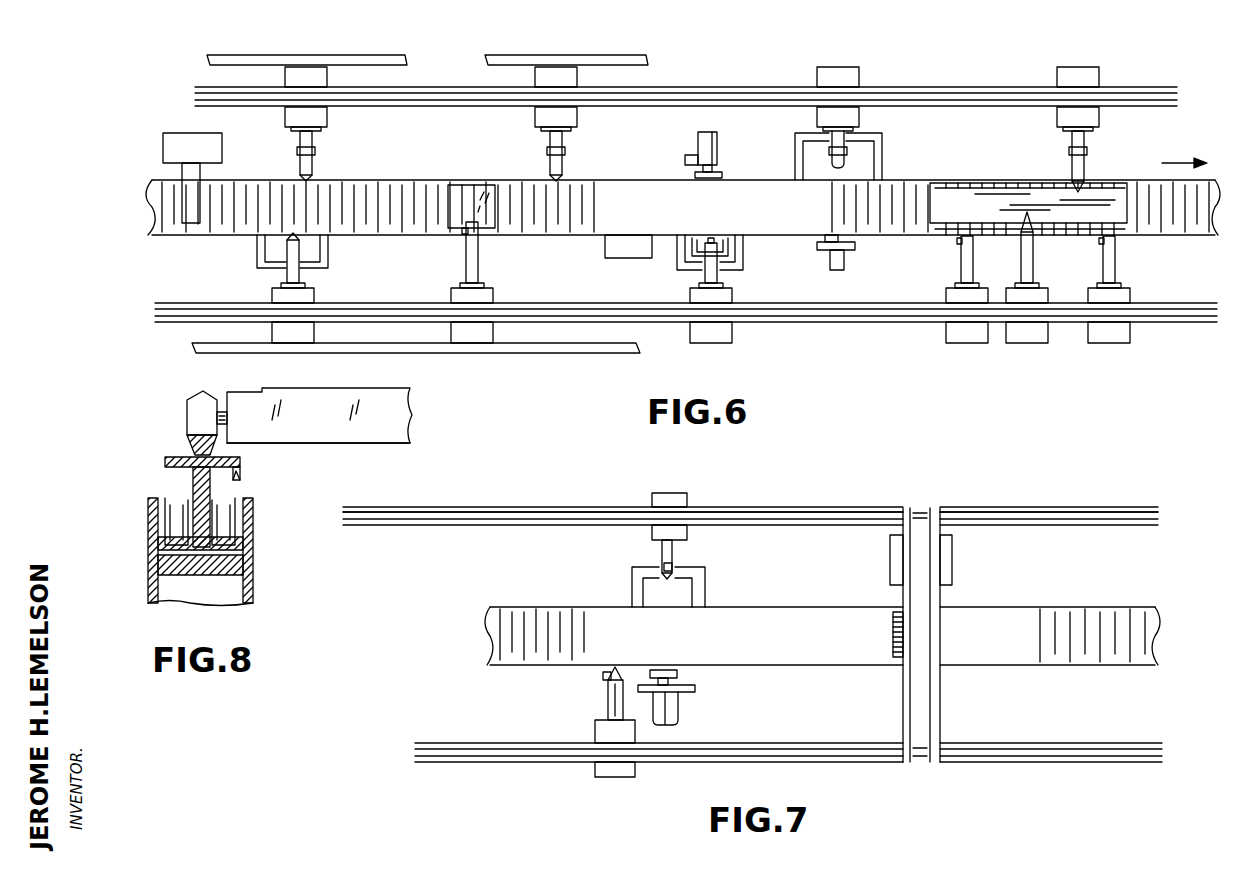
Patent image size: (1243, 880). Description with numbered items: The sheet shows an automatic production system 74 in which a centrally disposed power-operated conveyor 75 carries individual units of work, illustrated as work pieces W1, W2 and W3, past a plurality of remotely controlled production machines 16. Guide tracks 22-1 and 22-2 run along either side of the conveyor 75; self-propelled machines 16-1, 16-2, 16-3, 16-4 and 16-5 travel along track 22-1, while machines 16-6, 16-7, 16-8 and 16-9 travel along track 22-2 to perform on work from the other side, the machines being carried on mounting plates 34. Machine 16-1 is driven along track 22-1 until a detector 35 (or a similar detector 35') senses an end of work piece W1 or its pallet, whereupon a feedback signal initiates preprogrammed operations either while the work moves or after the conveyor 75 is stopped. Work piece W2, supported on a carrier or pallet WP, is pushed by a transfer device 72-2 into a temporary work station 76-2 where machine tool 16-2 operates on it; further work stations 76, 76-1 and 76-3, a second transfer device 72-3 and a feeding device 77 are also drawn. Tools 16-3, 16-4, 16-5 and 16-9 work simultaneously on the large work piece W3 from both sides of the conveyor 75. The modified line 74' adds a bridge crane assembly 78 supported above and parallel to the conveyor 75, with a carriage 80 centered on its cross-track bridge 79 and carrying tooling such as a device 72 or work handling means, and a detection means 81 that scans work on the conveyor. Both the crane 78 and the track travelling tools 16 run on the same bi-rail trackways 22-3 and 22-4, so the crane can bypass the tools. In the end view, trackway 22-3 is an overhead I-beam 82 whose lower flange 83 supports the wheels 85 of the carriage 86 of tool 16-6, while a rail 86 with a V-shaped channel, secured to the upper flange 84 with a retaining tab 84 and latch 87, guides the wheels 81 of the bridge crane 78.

In FIG. 6, the automatic production system 74 is at (83, 97).
In FIG. 7, the automatic production system or line 74' is at (398, 572).
In FIG. 6, the track 22-1 is at (162, 310).
In FIG. 6, the track or guide way 22-2 is at (232, 90).
In FIG. 7, the trackway 22-3 is at (1118, 507).
In FIG. 8, the trackway 22-3 is at (158, 459).
In FIG. 7, the trackway 22-4 is at (428, 766).
In FIG. 6, the tool mounting plate 34 is at (240, 57).
In FIG. 6, the photoelectric detector 35 is at (672, 212).
In FIG. 7, the photoelectric detector 35 is at (646, 633).
In FIG. 6, the tool clamp 35' is at (669, 158).
In FIG. 6, the production machine 16 is at (290, 335).
In FIG. 7, the production machine 16 is at (580, 775).
In FIG. 6, the machine or tool 16-1 is at (495, 340).
In FIG. 7, the machine or tool 16-1 is at (621, 778).
In FIG. 6, the automatically controlled machine tool 16-2 is at (735, 338).
In FIG. 6, the tool 16-3 is at (947, 338).
In FIG. 6, the tool 16-4 is at (1010, 338).
In FIG. 6, the tool 16-5 is at (1092, 338).
In FIG. 6, the production tool 16-6 is at (308, 74).
In FIG. 7, the production tool 16-6 is at (655, 531).
In FIG. 8, the production tool 16-6 is at (253, 569).
In FIG. 6, the production machine 16-7 is at (556, 74).
In FIG. 6, the production machine 16-8 is at (840, 70).
In FIG. 6, the self-propelled production machine 16-9 is at (1060, 72).
In FIG. 7, the transfer device 72 is at (682, 713).
In FIG. 6, the transfer device 72-2 is at (716, 146).
In FIG. 6, the sensing device 72-3 is at (834, 268).
In FIG. 6, the power-operated conveyor 75 is at (150, 196).
In FIG. 7, the power-operated conveyor 75 is at (488, 620).
In FIG. 6, the work station 76 is at (234, 253).
In FIG. 7, the work station 76 is at (706, 580).
In FIG. 6, the work holding fixture 76-1 is at (258, 272).
In FIG. 6, the temporary work station 76-2 is at (680, 270).
In FIG. 6, the work holding fixture 76-3 is at (882, 150).
In FIG. 6, the work feeding device 77 is at (182, 150).
In FIG. 7, the bridge crane assembly 78 is at (932, 696).
In FIG. 8, the bridge crane assembly 78 is at (408, 445).
In FIG. 7, the bridge 79 is at (918, 535).
In FIG. 8, the bridge 79 is at (412, 421).
In FIG. 7, the carriage 80 is at (953, 569).
In FIG. 7, the wheels of the bridge crane 81 is at (893, 637).
In FIG. 8, the wheels of the bridge crane 81 is at (187, 420).
In FIG. 8, the I-beam 82 is at (168, 468).
In FIG. 8, the lower flange 83 is at (243, 544).
In FIG. 8, the upper flange 84 is at (242, 463).
In FIG. 8, the wheels 85 is at (220, 503).
In FIG. 7, the rail 86 is at (1040, 518).
In FIG. 8, the rail 86 is at (190, 447).
In FIG. 8, the latch 87 is at (240, 478).
In FIG. 6, the work piece W1 is at (455, 195).
In FIG. 6, the work piece W2 is at (735, 260).
In FIG. 6, the work piece W3 is at (1005, 192).
In FIG. 6, the carrier or pallet WP is at (722, 250).